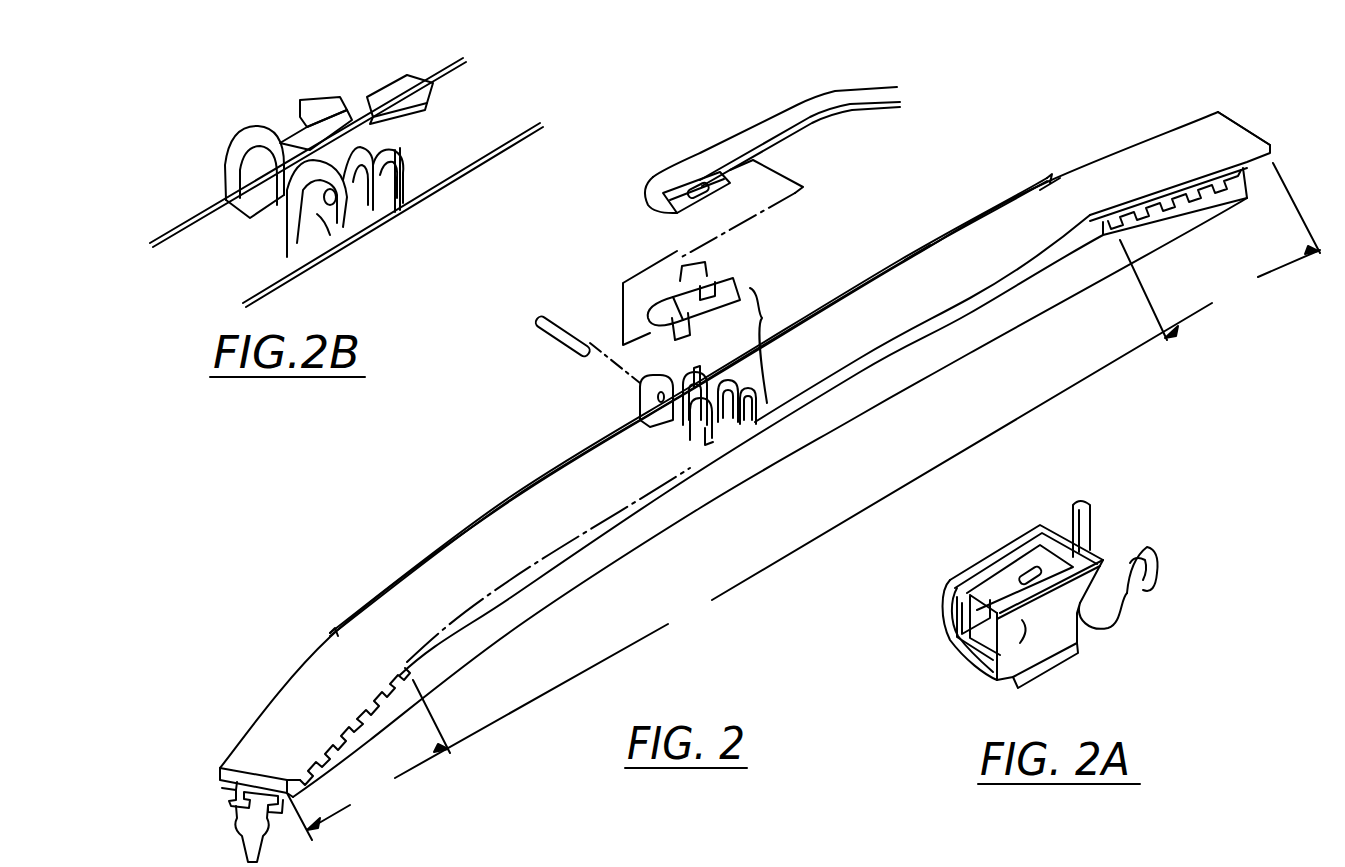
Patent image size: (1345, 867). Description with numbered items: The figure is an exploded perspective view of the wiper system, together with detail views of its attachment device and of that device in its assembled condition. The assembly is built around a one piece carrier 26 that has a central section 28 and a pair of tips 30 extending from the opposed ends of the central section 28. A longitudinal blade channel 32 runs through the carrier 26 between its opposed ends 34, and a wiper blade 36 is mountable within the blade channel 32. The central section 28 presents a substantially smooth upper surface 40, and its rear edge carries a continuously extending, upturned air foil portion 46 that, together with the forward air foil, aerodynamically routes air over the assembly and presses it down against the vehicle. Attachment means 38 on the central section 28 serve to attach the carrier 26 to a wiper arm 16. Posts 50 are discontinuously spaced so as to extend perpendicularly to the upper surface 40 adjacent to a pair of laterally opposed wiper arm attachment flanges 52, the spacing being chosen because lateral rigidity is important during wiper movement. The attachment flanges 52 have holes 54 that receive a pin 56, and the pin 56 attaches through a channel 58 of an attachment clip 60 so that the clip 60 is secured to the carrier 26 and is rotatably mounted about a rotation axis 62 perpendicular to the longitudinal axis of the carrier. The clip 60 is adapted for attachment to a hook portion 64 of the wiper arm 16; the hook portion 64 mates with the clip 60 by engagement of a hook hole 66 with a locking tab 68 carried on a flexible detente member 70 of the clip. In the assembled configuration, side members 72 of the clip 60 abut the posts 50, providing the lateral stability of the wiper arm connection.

In FIG. 2, the wiper arm 16 is at (850, 102).
In FIG. 2, the one piece carrier 26 is at (512, 496).
In FIG. 2, the central section 28 is at (667, 493).
In FIG. 2, the tips 30 is at (287, 685).
In FIG. 2, the longitudinal blade channel 32 is at (227, 778).
In FIG. 2, the opposed ends 34 is at (287, 795).
In FIG. 2, the wiper blade 36 is at (245, 827).
In FIG. 2, the attachment means 38 is at (777, 345).
In FIG. 2, the upper surface 40 is at (1070, 213).
In FIG. 2B, the upper surface 40 is at (213, 220).
In FIG. 2, the upturned air foil portion 46 is at (917, 247).
In FIG. 2, the posts 50 is at (705, 372).
In FIG. 2B, the posts 50 is at (407, 190).
In FIG. 2, the wiper arm attachment flanges 52 is at (638, 392).
In FIG. 2, the holes 54 is at (733, 440).
In FIG. 2, the pin 56 is at (560, 318).
In FIG. 2B, the pin 56 is at (313, 217).
In FIG. 2A, the channel 58 is at (1147, 577).
In FIG. 2, the attachment clip 60 is at (678, 259).
In FIG. 2A, the attachment clip 60 is at (1132, 630).
In FIG. 2B, the rotation axis 62 is at (240, 140).
In FIG. 2, the hook portion 64 is at (668, 216).
In FIG. 2, the hook hole 66 is at (702, 180).
In FIG. 2A, the locking tab 68 is at (1030, 571).
In FIG. 2A, the flexible detente member 70 is at (967, 617).
In FIG. 2A, the side members 72 is at (997, 680).
In FIG. 2B, the side members 72 is at (367, 140).